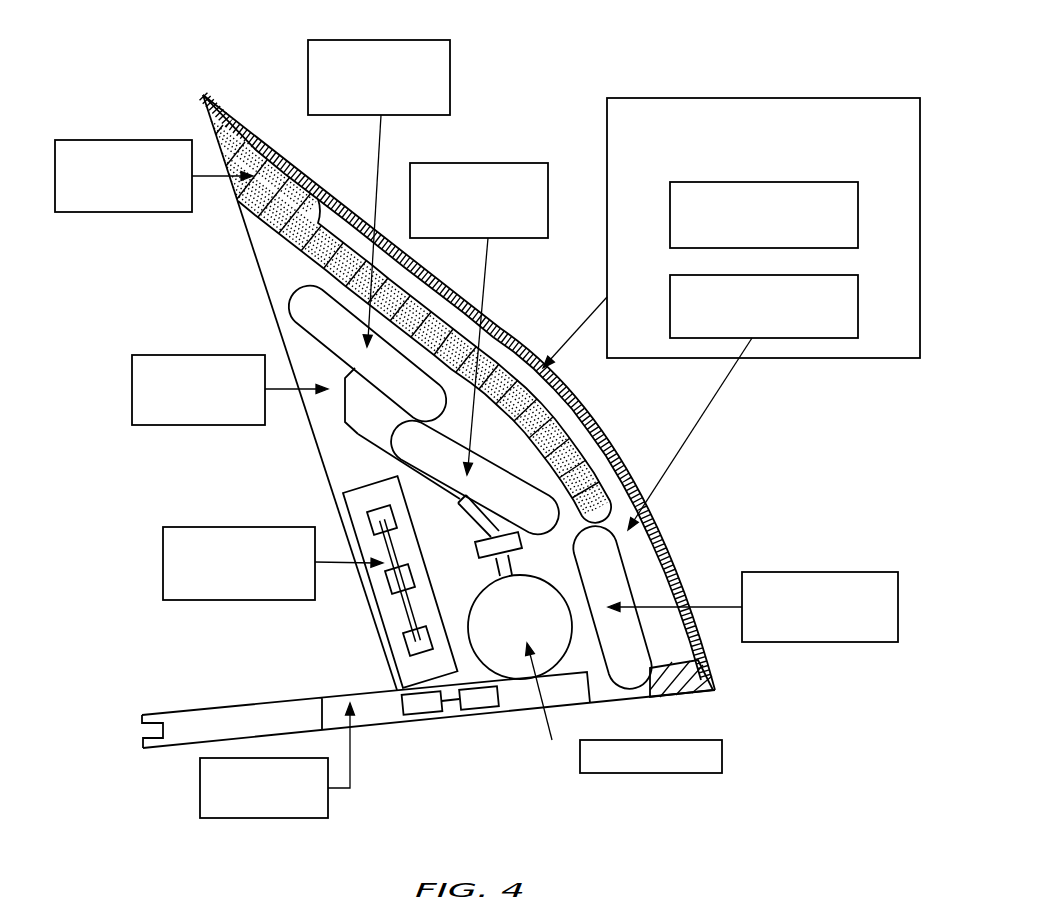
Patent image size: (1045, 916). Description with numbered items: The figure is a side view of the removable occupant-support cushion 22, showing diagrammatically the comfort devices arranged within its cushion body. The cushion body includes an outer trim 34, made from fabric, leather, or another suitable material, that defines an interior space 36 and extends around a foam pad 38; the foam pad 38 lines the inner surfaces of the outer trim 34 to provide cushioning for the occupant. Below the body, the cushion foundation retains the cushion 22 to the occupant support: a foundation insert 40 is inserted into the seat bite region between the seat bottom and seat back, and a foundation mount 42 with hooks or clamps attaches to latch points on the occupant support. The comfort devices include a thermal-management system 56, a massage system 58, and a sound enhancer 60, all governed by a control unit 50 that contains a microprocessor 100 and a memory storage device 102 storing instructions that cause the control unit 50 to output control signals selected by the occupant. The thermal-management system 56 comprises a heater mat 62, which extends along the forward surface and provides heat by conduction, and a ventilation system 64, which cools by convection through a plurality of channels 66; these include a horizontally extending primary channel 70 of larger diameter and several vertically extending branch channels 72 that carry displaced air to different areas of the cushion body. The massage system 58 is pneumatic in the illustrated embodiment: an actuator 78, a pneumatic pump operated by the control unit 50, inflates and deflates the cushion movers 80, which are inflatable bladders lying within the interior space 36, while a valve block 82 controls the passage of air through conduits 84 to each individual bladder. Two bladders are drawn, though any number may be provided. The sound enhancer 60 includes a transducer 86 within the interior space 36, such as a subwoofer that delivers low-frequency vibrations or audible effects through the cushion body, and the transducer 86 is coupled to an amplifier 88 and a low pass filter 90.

The removable occupant-support cushion 22 is at (553, 78).
The outer trim 34 is at (240, 117).
The interior space 36 is at (280, 273).
The foam pad 38 is at (122, 140).
The foundation insert 40 is at (230, 702).
The foundation mount 42 is at (137, 723).
The control unit 50 is at (200, 788).
The thermal-management system 56 is at (758, 98).
The massage system 58 is at (193, 355).
The sound enhancer 60 is at (163, 570).
The heater mat 62 is at (858, 215).
The ventilation system 64 is at (828, 338).
The channels 66 is at (648, 558).
The primary channel 70 is at (817, 572).
The branch channels 72 is at (452, 70).
The actuator 78 is at (722, 760).
The cushion movers 80 is at (480, 163).
The valve block 82 is at (475, 553).
The conduits 84 is at (357, 435).
The transducer 86 is at (372, 521).
The amplifier 88 is at (390, 586).
The low pass filter 90 is at (406, 650).
The microprocessor 100 is at (426, 715).
The memory storage device 102 is at (482, 710).